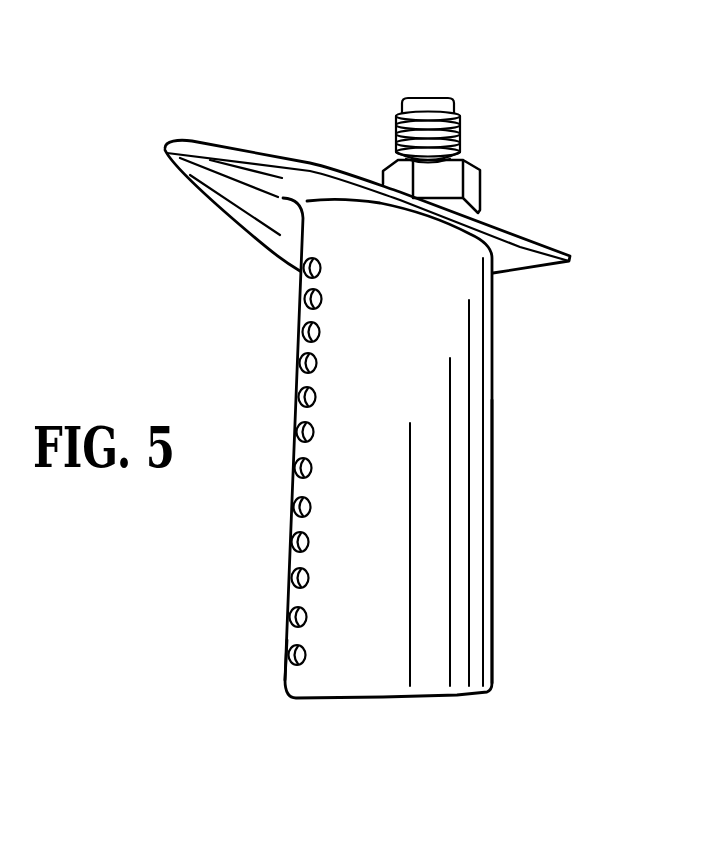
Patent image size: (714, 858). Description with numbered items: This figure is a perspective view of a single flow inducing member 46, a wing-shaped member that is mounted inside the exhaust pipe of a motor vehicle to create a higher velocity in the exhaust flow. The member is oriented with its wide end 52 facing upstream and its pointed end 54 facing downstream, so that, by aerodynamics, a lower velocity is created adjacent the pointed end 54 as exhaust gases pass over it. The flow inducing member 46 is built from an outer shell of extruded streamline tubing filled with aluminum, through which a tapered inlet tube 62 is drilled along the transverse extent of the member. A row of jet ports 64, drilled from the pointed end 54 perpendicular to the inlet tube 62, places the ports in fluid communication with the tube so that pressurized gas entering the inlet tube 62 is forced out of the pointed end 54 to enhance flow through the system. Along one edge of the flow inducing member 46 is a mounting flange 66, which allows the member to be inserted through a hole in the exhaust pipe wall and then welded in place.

The flow inducing member 46 is at (494, 370).
The wide end 52 is at (494, 613).
The pointed end 54 is at (285, 677).
The inlet tube 62 is at (438, 104).
The jet ports 64 is at (287, 583).
The mounting flange 66 is at (268, 150).